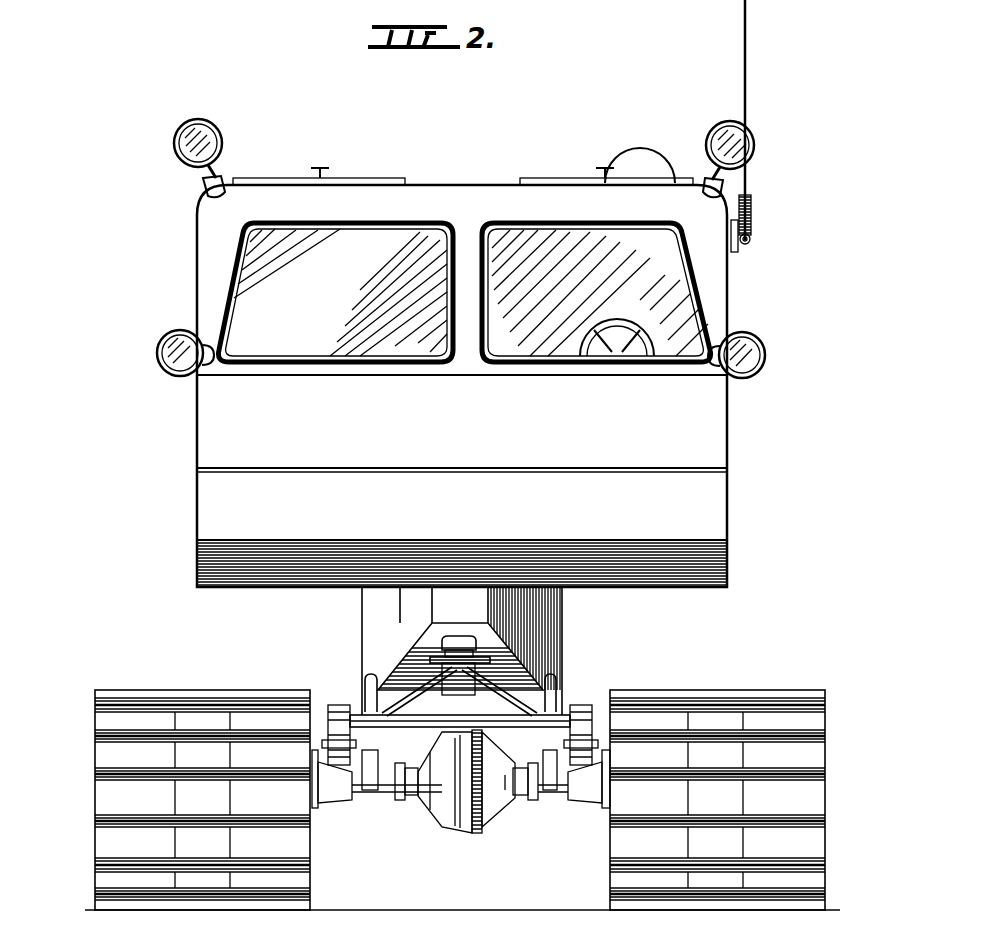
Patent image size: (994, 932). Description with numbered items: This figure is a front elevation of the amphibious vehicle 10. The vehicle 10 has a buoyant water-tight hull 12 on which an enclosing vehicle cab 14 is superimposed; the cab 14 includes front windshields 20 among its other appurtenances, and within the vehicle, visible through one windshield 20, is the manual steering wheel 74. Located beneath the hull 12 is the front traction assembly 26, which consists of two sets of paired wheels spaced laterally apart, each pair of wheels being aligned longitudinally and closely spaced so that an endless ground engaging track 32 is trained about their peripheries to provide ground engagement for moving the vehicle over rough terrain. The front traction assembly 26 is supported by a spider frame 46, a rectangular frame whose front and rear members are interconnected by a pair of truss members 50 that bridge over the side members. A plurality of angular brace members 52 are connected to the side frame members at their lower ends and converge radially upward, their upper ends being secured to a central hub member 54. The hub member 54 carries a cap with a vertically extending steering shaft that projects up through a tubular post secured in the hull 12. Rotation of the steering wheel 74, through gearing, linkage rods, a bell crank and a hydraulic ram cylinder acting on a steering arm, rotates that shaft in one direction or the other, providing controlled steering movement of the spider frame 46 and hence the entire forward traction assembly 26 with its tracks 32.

The vehicle 10 is at (756, 303).
The hull 12 is at (720, 565).
The vehicle cab 14 is at (705, 420).
The front windshields 20 is at (410, 250).
The front traction assembly 26 is at (677, 688).
The endless ground engaging track 32 is at (460, 781).
The spider frame 46 is at (568, 704).
The truss members 50 is at (425, 718).
The angular brace members 52 is at (410, 690).
The central hub member 54 is at (460, 682).
The manual steering wheel 74 is at (610, 318).